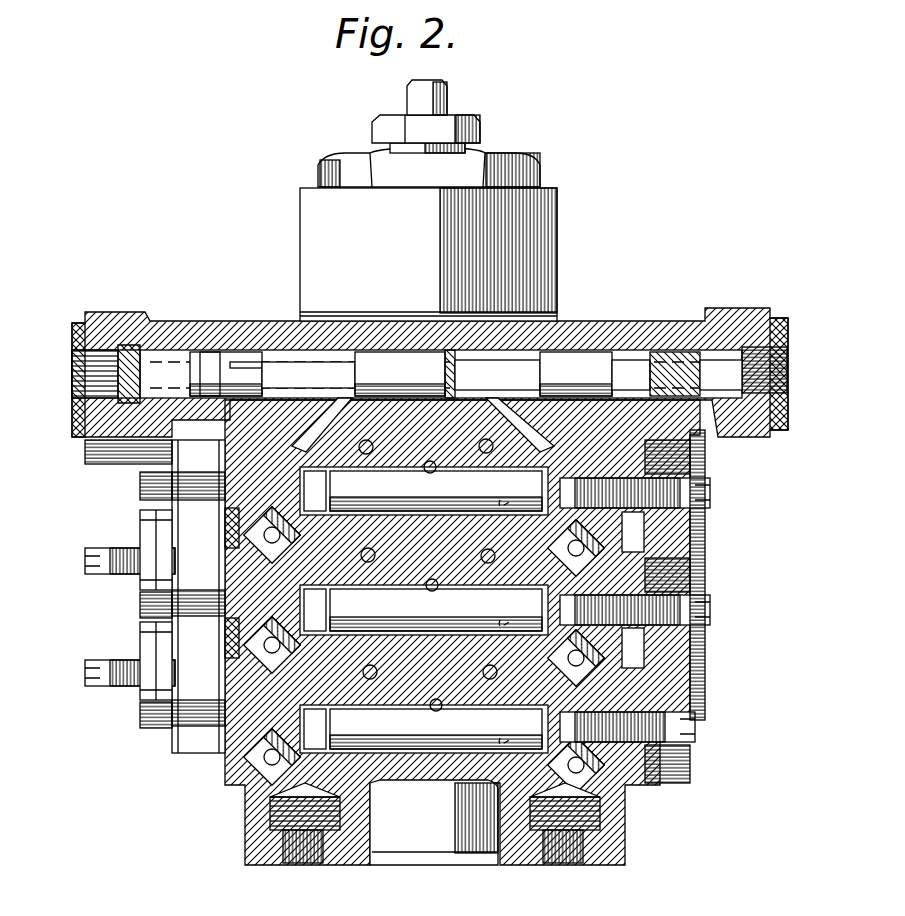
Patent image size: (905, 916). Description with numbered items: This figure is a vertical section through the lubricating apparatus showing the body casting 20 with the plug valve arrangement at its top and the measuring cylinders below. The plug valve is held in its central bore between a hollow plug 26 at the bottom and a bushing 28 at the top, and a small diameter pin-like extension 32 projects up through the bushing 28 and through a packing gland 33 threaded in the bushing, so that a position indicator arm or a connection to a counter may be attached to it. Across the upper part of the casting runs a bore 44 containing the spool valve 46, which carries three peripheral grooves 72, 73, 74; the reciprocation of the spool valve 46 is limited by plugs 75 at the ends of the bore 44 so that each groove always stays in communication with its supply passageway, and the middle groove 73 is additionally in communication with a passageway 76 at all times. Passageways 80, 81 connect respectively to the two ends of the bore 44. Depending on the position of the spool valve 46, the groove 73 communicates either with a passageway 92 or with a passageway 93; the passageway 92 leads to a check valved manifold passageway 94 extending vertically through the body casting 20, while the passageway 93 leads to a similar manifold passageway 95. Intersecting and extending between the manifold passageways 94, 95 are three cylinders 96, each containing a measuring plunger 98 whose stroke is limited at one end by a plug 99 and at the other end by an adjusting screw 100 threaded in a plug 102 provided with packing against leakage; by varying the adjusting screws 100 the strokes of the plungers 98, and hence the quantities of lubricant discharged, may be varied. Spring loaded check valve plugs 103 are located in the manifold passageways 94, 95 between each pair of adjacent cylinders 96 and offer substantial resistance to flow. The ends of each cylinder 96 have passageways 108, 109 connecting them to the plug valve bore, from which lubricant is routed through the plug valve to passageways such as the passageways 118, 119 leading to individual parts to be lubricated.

The body casting 20 is at (690, 330).
The hollow plug 26 is at (410, 858).
The bushing 28 is at (530, 168).
The pin-like extension 32 is at (440, 102).
The packing gland 33 is at (466, 130).
The bore 44 is at (200, 360).
The spool valve 46 is at (290, 372).
The peripheral groove 72 is at (236, 362).
The peripheral groove 73 is at (378, 372).
The peripheral groove 74 is at (560, 365).
The plug 75 is at (78, 332).
The passageway 76 is at (418, 362).
The passageway 80 is at (212, 352).
The passageway 81 is at (598, 350).
The passageway 92 is at (345, 436).
The passageway 93 is at (512, 440).
The manifold passageway 94 is at (290, 545).
The manifold passageway 95 is at (556, 548).
The cylinder 96 is at (430, 462).
The measuring plunger 98 is at (448, 467).
The plug 99 is at (226, 452).
The adjusting screw 100 is at (104, 556).
The plug 102 is at (140, 592).
The check valve plug 103 is at (236, 526).
The passageway 108 is at (336, 478).
The passageway 109 is at (482, 622).
The passageway 118 is at (373, 563).
The passageway 119 is at (509, 559).